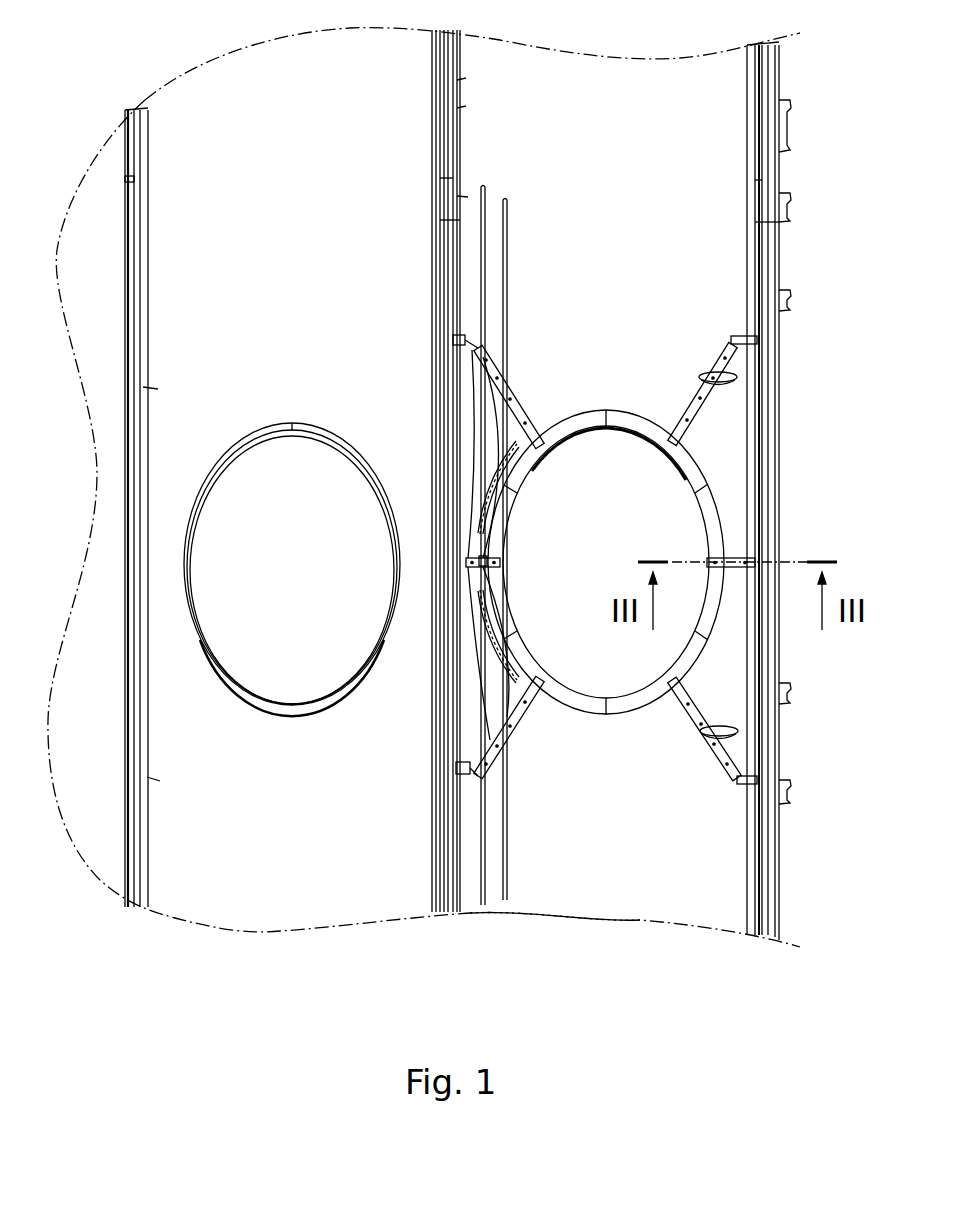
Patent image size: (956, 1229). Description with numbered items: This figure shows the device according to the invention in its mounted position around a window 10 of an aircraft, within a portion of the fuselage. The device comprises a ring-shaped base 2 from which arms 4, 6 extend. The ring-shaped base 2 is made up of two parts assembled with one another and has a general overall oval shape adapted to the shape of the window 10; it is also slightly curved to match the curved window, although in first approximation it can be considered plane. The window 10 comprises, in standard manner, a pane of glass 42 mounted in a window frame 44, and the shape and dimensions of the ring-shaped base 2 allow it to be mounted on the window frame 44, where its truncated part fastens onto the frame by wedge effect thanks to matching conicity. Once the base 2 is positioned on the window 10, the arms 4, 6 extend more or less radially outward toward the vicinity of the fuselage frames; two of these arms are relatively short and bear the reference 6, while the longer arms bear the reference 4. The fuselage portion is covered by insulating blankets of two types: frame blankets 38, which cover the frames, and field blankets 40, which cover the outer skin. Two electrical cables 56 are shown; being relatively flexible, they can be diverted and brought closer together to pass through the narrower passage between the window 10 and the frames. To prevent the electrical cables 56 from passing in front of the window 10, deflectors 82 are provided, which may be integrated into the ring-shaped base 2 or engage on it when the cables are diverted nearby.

The ring-shaped base 2 is at (563, 428).
The arms 4 is at (522, 413).
The arms 6 is at (493, 560).
The window 10 is at (602, 677).
The frame blankets 38 is at (772, 880).
The field blankets 40 is at (590, 920).
The pane of glass 42 is at (278, 703).
The window frame 44 is at (347, 702).
The electrical cables 56 is at (487, 190).
The deflectors 82 is at (510, 480).